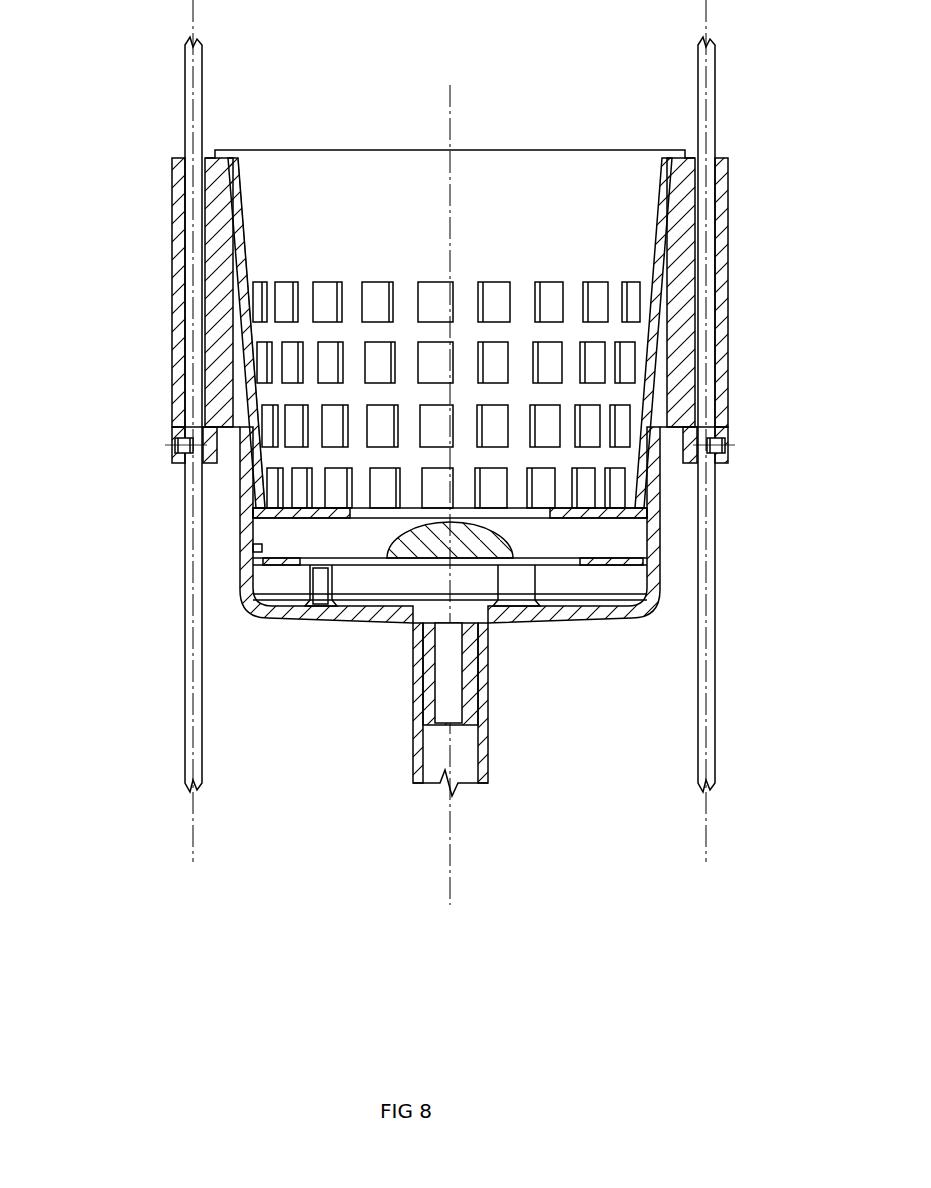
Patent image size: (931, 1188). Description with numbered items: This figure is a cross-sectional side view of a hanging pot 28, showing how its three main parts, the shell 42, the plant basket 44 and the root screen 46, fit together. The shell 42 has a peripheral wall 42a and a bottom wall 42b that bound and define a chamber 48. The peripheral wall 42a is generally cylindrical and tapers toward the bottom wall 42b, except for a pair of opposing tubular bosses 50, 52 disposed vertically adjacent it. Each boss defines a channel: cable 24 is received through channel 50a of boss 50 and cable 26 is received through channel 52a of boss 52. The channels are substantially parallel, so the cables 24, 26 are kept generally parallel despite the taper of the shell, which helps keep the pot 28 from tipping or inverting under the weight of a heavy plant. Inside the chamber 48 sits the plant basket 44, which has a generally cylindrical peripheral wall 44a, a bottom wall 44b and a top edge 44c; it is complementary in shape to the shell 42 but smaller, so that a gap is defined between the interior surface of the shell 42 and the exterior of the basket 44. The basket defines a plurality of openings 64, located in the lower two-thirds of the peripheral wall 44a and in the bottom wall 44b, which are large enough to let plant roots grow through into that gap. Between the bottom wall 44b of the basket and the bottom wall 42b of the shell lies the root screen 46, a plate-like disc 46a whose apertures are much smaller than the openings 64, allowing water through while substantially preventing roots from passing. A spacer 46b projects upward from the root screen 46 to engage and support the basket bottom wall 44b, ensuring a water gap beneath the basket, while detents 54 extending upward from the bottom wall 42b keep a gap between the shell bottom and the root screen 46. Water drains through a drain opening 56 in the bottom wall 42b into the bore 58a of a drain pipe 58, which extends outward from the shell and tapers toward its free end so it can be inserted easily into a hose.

The cable 24 is at (189, 664).
The cable 26 is at (713, 704).
The pot 28 is at (100, 560).
The shell 42 is at (390, 545).
The peripheral wall 42a is at (242, 482).
The bottom wall 42b is at (566, 617).
The plant basket 44 is at (493, 321).
The peripheral wall 44a is at (585, 217).
The bottom wall 44b is at (580, 512).
The top edge 44c is at (289, 149).
The root screen 46 is at (524, 565).
The plate-like disc 46a is at (371, 557).
The spacer 46b is at (486, 545).
The chamber 48 is at (257, 551).
The tubular boss 50 is at (184, 310).
The channel 50a is at (191, 266).
The tubular boss 52 is at (724, 310).
The channel 52a is at (712, 203).
The detent 54 is at (333, 579).
The drain opening 56 is at (425, 690).
The drain pipe 58 is at (456, 709).
The bore 58a is at (447, 703).
The openings 64 is at (541, 284).